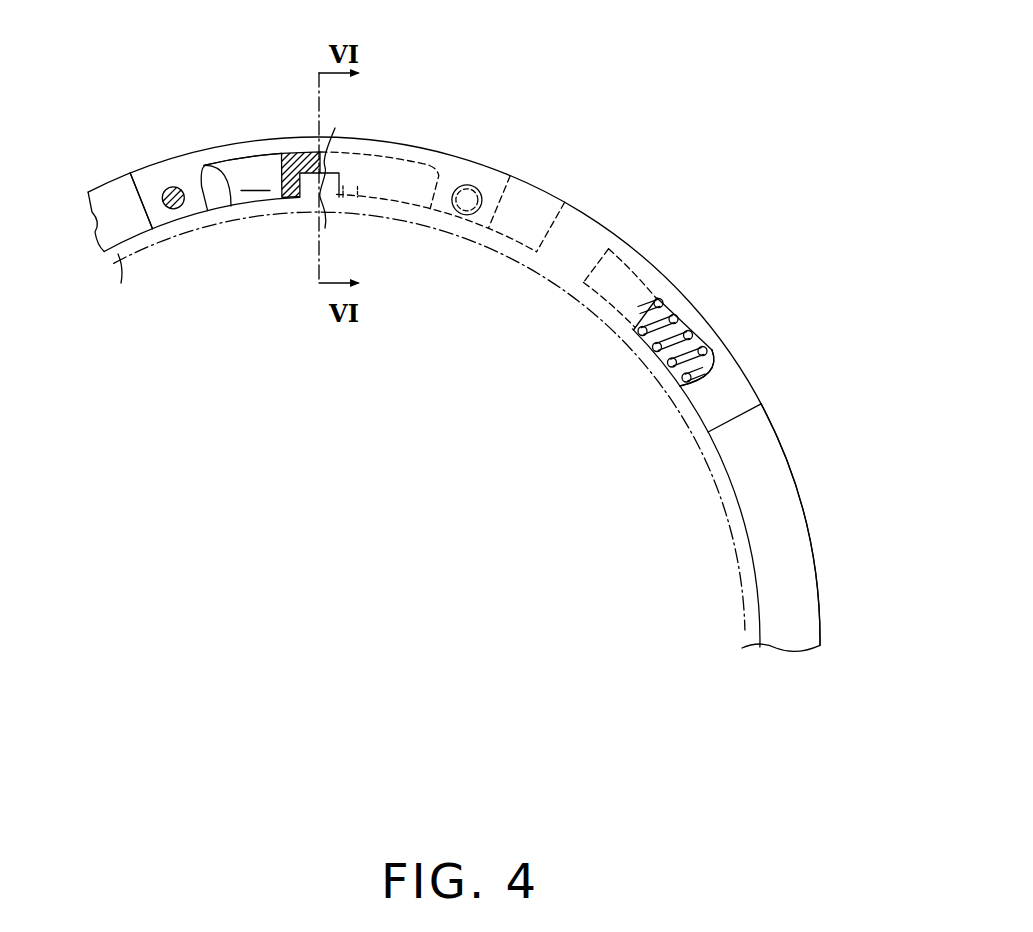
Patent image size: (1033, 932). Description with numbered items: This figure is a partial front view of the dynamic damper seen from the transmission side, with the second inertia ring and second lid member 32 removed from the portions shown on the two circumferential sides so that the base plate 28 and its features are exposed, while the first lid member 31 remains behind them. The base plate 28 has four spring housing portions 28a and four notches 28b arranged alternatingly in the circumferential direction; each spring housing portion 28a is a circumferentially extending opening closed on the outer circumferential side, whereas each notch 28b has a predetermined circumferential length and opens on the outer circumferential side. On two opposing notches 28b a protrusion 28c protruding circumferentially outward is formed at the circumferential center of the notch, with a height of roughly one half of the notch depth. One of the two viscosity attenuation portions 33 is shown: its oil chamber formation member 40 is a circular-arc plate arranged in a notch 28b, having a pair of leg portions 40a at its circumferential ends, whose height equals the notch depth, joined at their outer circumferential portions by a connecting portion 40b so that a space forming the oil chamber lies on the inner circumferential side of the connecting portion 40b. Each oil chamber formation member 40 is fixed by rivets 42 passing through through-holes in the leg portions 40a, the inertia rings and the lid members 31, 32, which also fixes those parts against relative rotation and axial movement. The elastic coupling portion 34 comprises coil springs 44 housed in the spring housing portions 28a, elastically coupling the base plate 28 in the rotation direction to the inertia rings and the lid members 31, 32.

The base plate 28 is at (122, 288).
The spring housing portion 28a is at (607, 357).
The notch 28b is at (205, 166).
The protrusion 28c is at (308, 192).
The first lid member 31 is at (793, 553).
The second lid member 32 is at (552, 267).
The viscosity attenuation portion 33 is at (291, 131).
The elastic coupling portion 34 is at (719, 356).
The oil chamber formation member 40 is at (146, 168).
The leg portion 40a is at (160, 213).
The connecting portion 40b is at (247, 150).
The rivet 42 is at (185, 205).
The coil spring 44 is at (657, 351).